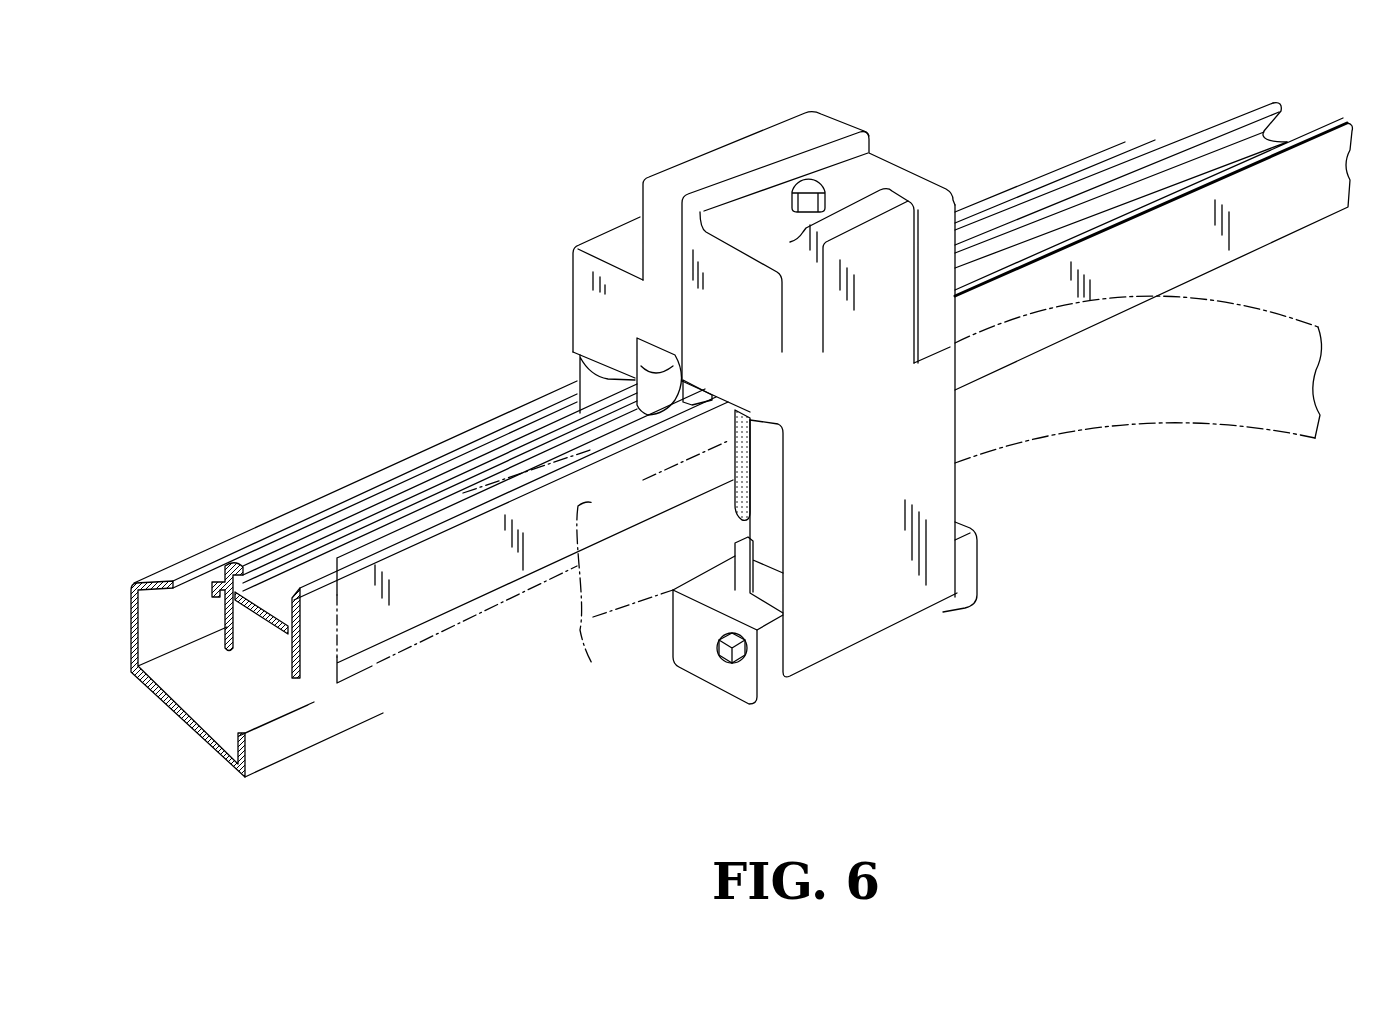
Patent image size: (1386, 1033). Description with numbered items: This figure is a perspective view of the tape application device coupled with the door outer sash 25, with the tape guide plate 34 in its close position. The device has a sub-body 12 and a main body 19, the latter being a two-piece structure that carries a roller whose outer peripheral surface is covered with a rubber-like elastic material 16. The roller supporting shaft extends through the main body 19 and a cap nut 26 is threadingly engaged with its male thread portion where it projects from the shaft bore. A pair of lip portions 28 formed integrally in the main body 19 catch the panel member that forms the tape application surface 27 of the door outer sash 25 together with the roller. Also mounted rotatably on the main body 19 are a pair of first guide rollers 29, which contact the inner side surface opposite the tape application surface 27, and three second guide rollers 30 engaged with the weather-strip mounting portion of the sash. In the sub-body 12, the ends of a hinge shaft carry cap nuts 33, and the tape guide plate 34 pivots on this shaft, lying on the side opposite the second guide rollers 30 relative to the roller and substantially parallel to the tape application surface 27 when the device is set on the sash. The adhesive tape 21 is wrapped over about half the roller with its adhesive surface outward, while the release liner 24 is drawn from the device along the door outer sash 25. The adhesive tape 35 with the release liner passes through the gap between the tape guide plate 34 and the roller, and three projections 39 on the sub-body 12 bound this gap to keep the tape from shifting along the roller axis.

The sub-body 12 is at (980, 573).
The rubber-like elastic material 16 is at (747, 477).
The main body 19 is at (697, 147).
The adhesive tape 21 is at (420, 643).
The release liner 24 is at (1183, 400).
The door outer sash 25 is at (290, 500).
The cap nut 26 is at (805, 180).
The tape application surface 27 is at (1270, 213).
The lip portions 28 is at (693, 398).
The first guide rollers 29 is at (587, 383).
The second guide rollers 30 is at (657, 372).
The cap nuts 33 is at (723, 657).
The tape guide plate 34 is at (857, 630).
The adhesive tape with the release liner 35 is at (596, 618).
The projections 39 is at (742, 550).